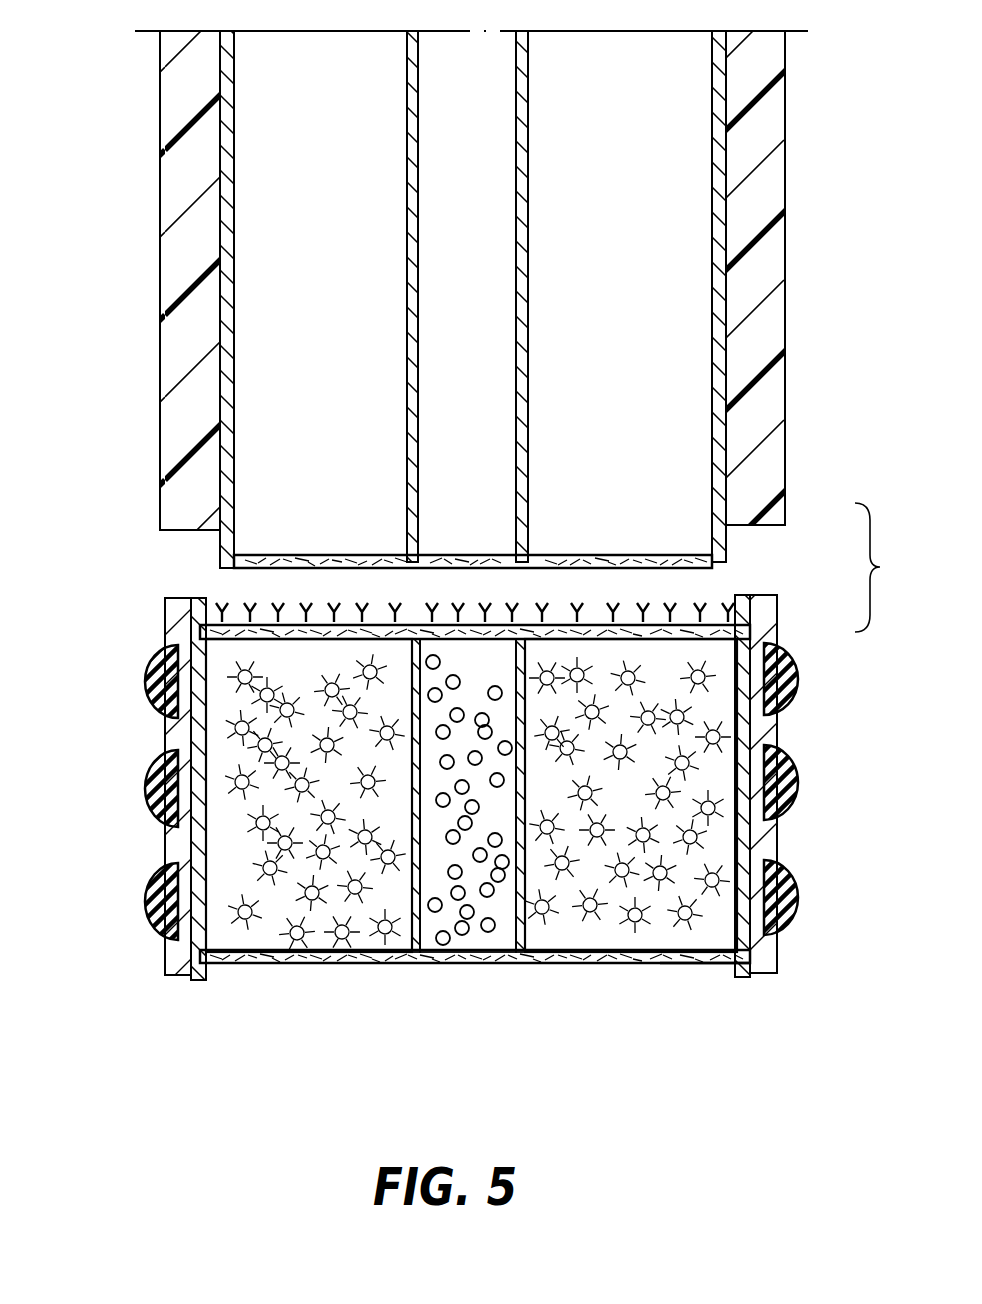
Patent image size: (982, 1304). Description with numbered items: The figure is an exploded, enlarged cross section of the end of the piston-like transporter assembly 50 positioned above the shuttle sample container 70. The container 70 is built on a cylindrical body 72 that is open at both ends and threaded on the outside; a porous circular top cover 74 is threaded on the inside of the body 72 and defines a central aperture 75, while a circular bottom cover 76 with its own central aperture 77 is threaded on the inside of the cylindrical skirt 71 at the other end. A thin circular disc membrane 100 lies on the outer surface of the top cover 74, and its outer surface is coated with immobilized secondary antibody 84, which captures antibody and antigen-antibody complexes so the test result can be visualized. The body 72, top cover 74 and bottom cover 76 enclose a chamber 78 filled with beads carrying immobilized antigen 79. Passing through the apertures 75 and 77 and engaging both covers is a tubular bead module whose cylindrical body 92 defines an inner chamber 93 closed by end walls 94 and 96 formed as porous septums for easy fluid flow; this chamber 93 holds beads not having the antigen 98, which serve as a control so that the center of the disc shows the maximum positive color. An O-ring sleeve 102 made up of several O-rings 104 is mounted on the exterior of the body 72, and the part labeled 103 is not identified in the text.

The transporter assembly 50 is at (790, 246).
The immobilized secondary antibody 84 is at (227, 604).
The end wall 94 is at (452, 612).
The central aperture 75 is at (520, 640).
The circular disc membrane 100 is at (477, 582).
The porous circular top cover 74 is at (752, 628).
The shuttle sample container 70 is at (780, 735).
The cylindrical body 72 is at (780, 852).
The O-rings 104 is at (146, 690).
The chamber 78 is at (208, 745).
The O-ring sleeve 102 is at (170, 848).
The left frame wall 103 is at (185, 980).
The cylindrical skirt 71 is at (212, 965).
The beads with immobilized antigen 79 is at (348, 950).
The central aperture 77 is at (430, 962).
The beads not having the antigen 98 is at (463, 950).
The chamber 93 is at (500, 948).
The end wall 96 is at (513, 962).
The cylindrical body 92 is at (555, 940).
The circular bottom cover 76 is at (705, 963).